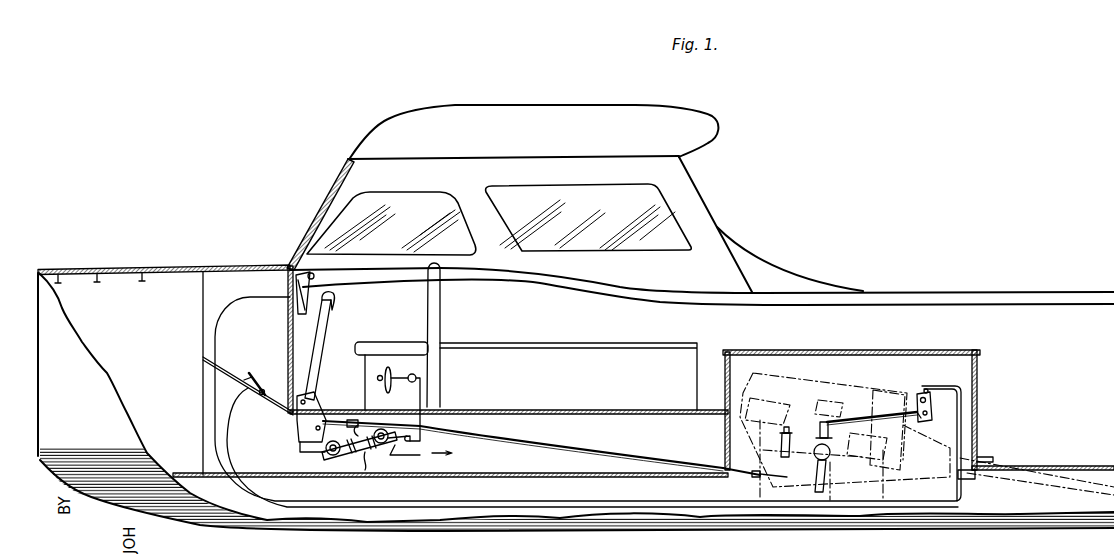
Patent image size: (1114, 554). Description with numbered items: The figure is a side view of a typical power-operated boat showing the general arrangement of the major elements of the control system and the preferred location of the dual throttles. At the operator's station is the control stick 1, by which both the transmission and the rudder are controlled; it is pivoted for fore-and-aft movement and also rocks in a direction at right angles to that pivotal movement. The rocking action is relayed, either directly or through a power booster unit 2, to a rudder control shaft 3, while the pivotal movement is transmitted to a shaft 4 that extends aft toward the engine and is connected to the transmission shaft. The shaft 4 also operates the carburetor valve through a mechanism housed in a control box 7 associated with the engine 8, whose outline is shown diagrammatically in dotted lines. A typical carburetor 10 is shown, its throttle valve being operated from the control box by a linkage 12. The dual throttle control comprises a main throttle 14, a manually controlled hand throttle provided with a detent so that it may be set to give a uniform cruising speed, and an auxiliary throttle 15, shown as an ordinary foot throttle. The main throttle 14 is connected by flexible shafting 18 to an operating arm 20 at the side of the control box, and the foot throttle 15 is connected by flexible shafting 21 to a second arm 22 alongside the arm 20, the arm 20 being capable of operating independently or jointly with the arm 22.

The control stick 1 is at (329, 336).
The power booster unit 2 is at (378, 452).
The rudder control shaft 3 is at (405, 457).
The shaft 4 is at (595, 447).
The control box 7 is at (928, 413).
The engine 8 is at (787, 477).
The carburetor 10 is at (820, 425).
The linkage 12 is at (872, 412).
The main throttle 14 is at (305, 277).
The auxiliary throttle 15 is at (252, 374).
The flexible shafting 18 is at (216, 350).
The operating arm 20 is at (922, 397).
The flexible shafting 21 is at (231, 448).
The second arm 22 is at (927, 391).